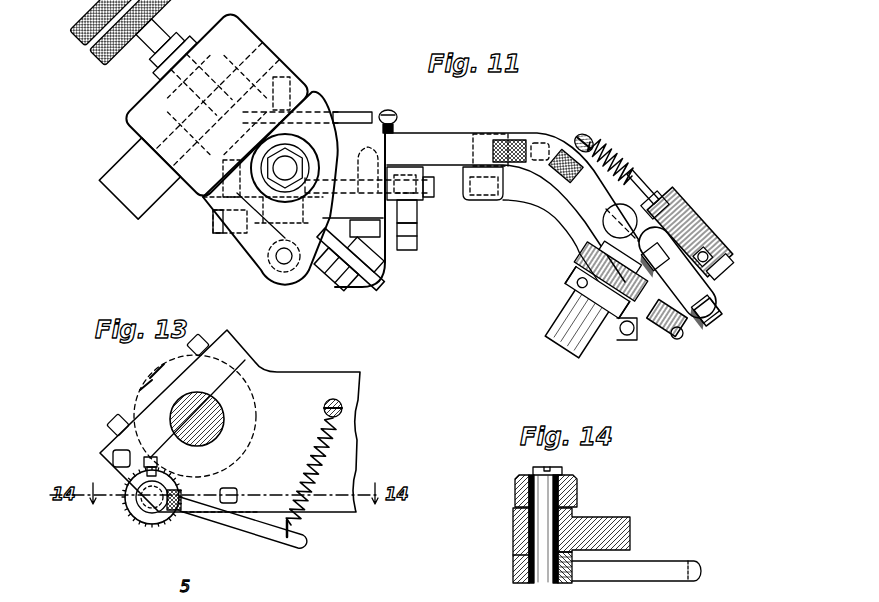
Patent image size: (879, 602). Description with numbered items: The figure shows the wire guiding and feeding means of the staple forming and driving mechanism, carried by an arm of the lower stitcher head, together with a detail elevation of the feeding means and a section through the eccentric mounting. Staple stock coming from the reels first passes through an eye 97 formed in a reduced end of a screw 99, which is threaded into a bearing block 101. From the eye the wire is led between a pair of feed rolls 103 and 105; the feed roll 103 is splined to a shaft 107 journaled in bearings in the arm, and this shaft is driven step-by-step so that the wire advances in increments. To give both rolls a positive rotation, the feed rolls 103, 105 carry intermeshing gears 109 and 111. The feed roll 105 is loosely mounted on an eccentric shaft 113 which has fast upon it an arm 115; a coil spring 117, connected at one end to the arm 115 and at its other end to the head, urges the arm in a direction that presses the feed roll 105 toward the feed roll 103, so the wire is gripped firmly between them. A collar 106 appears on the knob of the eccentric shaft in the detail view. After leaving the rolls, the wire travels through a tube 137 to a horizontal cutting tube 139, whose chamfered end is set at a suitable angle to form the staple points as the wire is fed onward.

In FIG. 11, the eye 97 is at (694, 326).
In FIG. 11, the screw 99 is at (733, 279).
In FIG. 11, the bearing block 101 is at (715, 292).
In FIG. 13, the bearing block 101 is at (137, 407).
In FIG. 11, the feed roll 103 is at (578, 280).
In FIG. 13, the feed roll 103 is at (158, 374).
In FIG. 11, the feed roll 105 is at (668, 338).
In FIG. 14, the feed roll 105 is at (579, 497).
In FIG. 13, the collar 106 is at (187, 517).
In FIG. 11, the shaft 107 is at (560, 316).
In FIG. 13, the shaft 107 is at (188, 433).
In FIG. 11, the gear 109 is at (582, 260).
In FIG. 13, the gear 109 is at (145, 388).
In FIG. 11, the gear 111 is at (655, 333).
In FIG. 14, the gear 111 is at (578, 478).
In FIG. 13, the eccentric shaft 113 is at (150, 502).
In FIG. 14, the eccentric shaft 113 is at (526, 535).
In FIG. 11, the arm 115 is at (641, 186).
In FIG. 13, the arm 115 is at (247, 522).
In FIG. 14, the arm 115 is at (650, 568).
In FIG. 11, the coil spring 117 is at (614, 160).
In FIG. 13, the coil spring 117 is at (327, 448).
In FIG. 11, the tube 137 is at (567, 216).
In FIG. 11, the cutting tube 139 is at (442, 194).